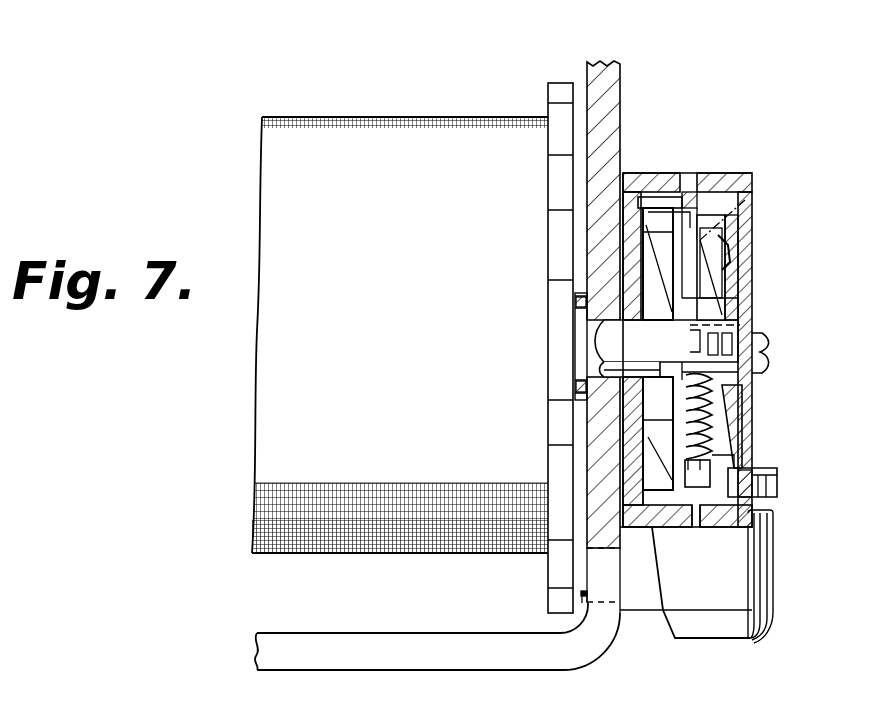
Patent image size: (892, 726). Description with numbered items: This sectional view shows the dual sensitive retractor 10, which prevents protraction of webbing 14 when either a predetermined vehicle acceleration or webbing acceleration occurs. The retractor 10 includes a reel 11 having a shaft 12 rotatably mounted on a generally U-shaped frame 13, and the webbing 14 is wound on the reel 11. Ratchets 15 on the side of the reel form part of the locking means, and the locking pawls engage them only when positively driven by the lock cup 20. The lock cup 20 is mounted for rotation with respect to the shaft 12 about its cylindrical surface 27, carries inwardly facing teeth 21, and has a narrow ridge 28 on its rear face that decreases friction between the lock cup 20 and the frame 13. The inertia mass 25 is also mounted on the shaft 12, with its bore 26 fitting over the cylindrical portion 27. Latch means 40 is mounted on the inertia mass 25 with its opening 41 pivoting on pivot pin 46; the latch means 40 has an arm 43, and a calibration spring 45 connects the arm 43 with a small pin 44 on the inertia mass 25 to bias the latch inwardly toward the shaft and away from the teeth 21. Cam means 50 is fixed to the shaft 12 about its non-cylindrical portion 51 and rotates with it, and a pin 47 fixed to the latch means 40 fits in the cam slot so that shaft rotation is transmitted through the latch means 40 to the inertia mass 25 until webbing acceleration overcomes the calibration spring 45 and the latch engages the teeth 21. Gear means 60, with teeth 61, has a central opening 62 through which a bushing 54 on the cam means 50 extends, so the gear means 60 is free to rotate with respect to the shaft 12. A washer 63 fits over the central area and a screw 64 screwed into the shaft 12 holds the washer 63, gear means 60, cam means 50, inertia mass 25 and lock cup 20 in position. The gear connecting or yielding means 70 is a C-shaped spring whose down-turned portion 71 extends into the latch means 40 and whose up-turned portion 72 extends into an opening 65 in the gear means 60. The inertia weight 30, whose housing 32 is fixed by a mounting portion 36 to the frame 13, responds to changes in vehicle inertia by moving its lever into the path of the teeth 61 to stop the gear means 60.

The dual sensitive retractor 10 is at (248, 424).
The reel 11 is at (553, 82).
The shaft 12 is at (596, 348).
The frame 13 is at (268, 645).
The webbing 14 is at (302, 180).
The ratchets 15 is at (556, 155).
The lock cup 20 is at (640, 178).
The inwardly facing teeth 21 is at (652, 530).
The inertia mass 25 is at (650, 455).
The bore 26 is at (598, 366).
The cylindrical portion 27 is at (628, 328).
The narrow ridge 28 is at (628, 175).
The inertia weight 30 is at (750, 646).
The housing 32 is at (762, 628).
The mounting portion 36 is at (585, 596).
The latch means 40 is at (692, 215).
The opening 41 is at (676, 225).
The arm 43 is at (740, 325).
The small pin 44 is at (712, 478).
The calibration spring 45 is at (648, 498).
The pivot pin 46 is at (750, 242).
The pin 47 is at (745, 268).
The cam means 50 is at (762, 246).
The non-cylindrical portion 51 is at (755, 380).
The bushing 54 is at (748, 296).
The gear means 60 is at (712, 530).
The teeth 61 is at (728, 180).
The central opening 62 is at (755, 312).
The washer 63 is at (755, 400).
The screw 64 is at (770, 357).
The opening 65 is at (752, 448).
The gear connecting or yielding means 70 is at (735, 521).
The down-turned portion 71 is at (745, 200).
The up-turned portion 72 is at (770, 470).